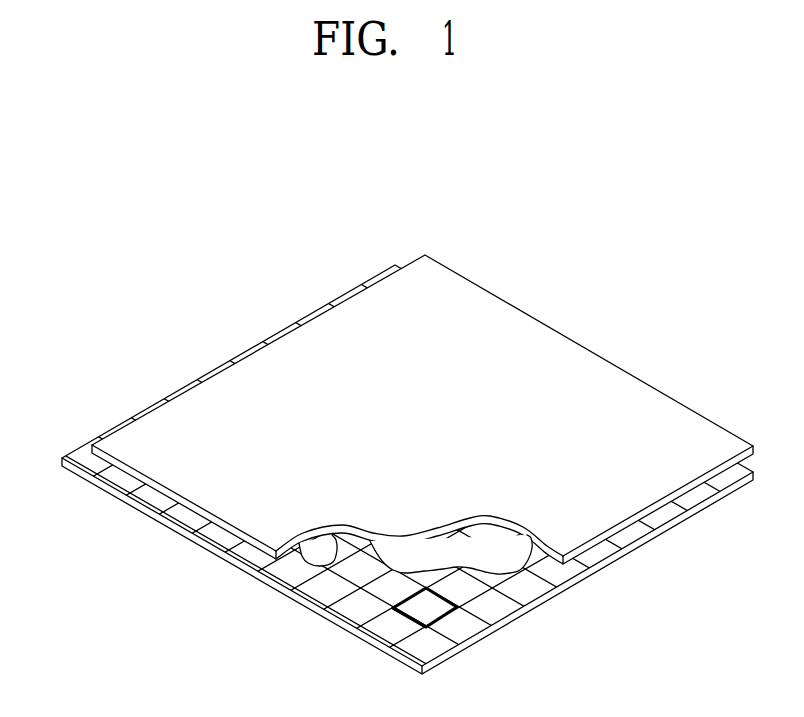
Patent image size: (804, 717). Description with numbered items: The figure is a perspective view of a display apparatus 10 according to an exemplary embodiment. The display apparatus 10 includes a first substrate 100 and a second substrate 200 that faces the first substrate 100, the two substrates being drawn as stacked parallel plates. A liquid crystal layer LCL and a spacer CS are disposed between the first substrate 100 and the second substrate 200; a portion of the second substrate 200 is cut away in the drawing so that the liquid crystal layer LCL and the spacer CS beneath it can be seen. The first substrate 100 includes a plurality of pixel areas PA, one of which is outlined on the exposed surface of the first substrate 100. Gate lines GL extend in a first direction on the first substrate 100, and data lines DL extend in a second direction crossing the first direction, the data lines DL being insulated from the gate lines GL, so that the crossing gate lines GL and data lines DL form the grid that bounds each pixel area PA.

The display apparatus 10 is at (605, 281).
The first substrate 100 is at (116, 492).
The second substrate 200 is at (168, 515).
The gate line GL is at (347, 600).
The data line DL is at (470, 618).
The pixel area PA is at (398, 613).
The spacer CS is at (313, 557).
The liquid crystal layer LCL is at (493, 562).